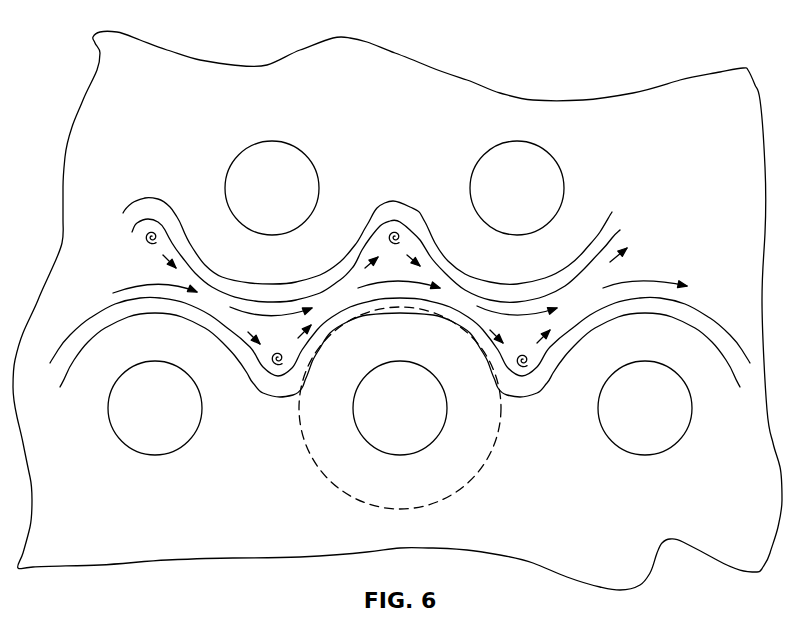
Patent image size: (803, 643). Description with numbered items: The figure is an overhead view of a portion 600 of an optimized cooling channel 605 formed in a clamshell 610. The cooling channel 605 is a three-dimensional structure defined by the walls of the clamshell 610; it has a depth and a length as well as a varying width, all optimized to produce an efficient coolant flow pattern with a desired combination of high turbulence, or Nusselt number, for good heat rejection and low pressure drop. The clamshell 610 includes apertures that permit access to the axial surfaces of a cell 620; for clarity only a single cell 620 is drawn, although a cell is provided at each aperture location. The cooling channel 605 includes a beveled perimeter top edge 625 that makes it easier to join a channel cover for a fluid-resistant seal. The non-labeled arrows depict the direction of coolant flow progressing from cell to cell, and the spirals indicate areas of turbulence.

The portion 600 is at (627, 50).
The cooling channel 605 is at (132, 273).
The clamshell 610 is at (702, 123).
The cell 620 is at (337, 488).
The beveled perimeter top edge 625 is at (155, 207).